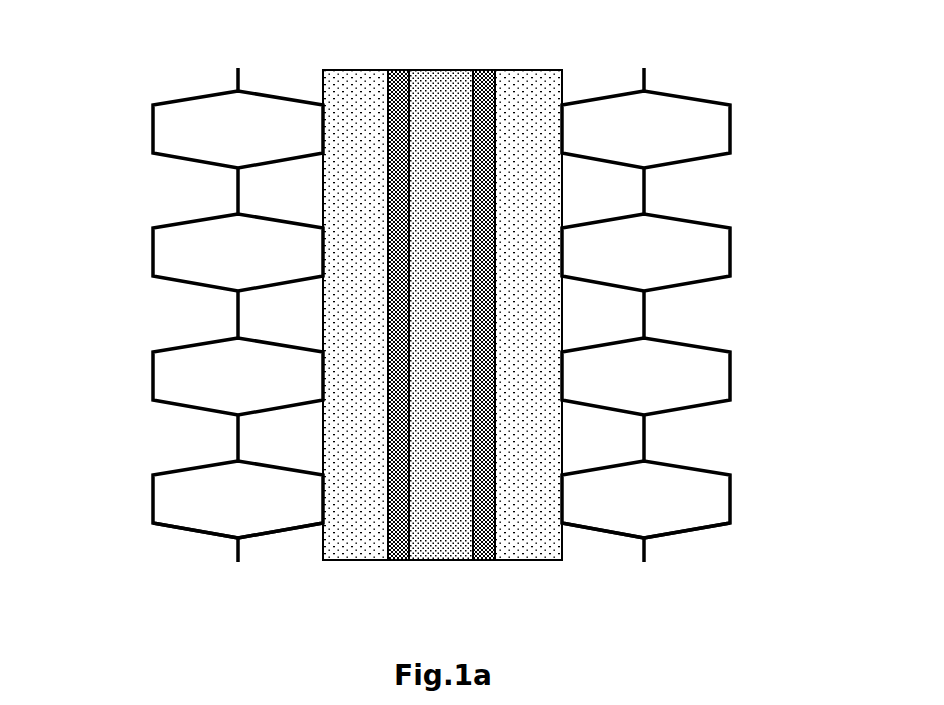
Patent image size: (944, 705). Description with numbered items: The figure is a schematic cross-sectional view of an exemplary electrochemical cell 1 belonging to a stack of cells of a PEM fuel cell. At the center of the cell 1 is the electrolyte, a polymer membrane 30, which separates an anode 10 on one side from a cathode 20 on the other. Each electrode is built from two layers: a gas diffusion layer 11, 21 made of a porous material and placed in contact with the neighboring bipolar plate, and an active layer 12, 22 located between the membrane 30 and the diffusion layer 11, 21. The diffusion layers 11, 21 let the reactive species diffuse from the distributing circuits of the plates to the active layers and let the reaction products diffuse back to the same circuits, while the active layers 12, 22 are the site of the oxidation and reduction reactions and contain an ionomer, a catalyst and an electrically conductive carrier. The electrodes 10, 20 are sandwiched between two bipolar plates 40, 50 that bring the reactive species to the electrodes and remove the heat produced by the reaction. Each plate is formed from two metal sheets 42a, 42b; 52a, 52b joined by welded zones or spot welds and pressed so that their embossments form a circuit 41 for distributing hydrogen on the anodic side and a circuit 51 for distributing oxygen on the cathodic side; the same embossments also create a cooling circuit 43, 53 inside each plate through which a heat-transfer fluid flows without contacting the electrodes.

The electrochemical cell 1 is at (153, 68).
The anode 10 is at (355, 332).
The gas diffusion layer 11 is at (355, 70).
The active layer 12 is at (400, 70).
The cathode 20 is at (526, 332).
The gas diffusion layer 21 is at (528, 70).
The active layer 22 is at (485, 70).
The polymer membrane 30 is at (441, 563).
The bipolar plate 40 is at (193, 360).
The circuit for distributing hydrogen 41 is at (268, 441).
The metal sheet 42a is at (292, 534).
The metal sheet 42b is at (187, 534).
The cooling circuit 43 is at (200, 255).
The bipolar plate 50 is at (708, 360).
The circuit for distributing oxygen 51 is at (620, 441).
The metal sheet 52a is at (598, 534).
The metal sheet 52b is at (692, 534).
The cooling circuit 53 is at (686, 253).